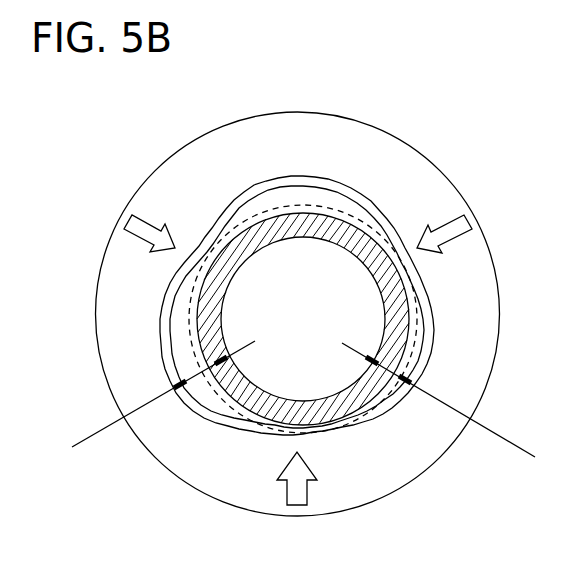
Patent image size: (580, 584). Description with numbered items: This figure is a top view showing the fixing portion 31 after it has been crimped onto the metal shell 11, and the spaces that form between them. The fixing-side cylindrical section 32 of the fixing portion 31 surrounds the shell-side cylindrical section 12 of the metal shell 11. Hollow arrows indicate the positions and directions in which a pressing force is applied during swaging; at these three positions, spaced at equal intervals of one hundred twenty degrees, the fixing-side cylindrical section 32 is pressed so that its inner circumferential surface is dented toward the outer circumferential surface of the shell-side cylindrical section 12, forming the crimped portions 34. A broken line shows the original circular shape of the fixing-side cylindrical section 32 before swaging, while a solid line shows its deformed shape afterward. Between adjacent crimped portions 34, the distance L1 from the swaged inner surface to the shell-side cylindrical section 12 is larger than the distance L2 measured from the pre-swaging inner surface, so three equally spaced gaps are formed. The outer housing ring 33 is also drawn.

The metal shell 11 is at (231, 277).
The shell-side cylindrical section 12 is at (298, 238).
The fixing portion 31 is at (463, 156).
The fixing-side cylindrical section 32 is at (299, 176).
The outer housing 33 is at (360, 137).
The crimped portions 34 is at (198, 250).
The distance between the inner surface of the fixing-side cylindrical section after L1 is at (163, 394).
The distance between the inner surface of the fixing-side cylindrical section before L2 is at (438, 400).